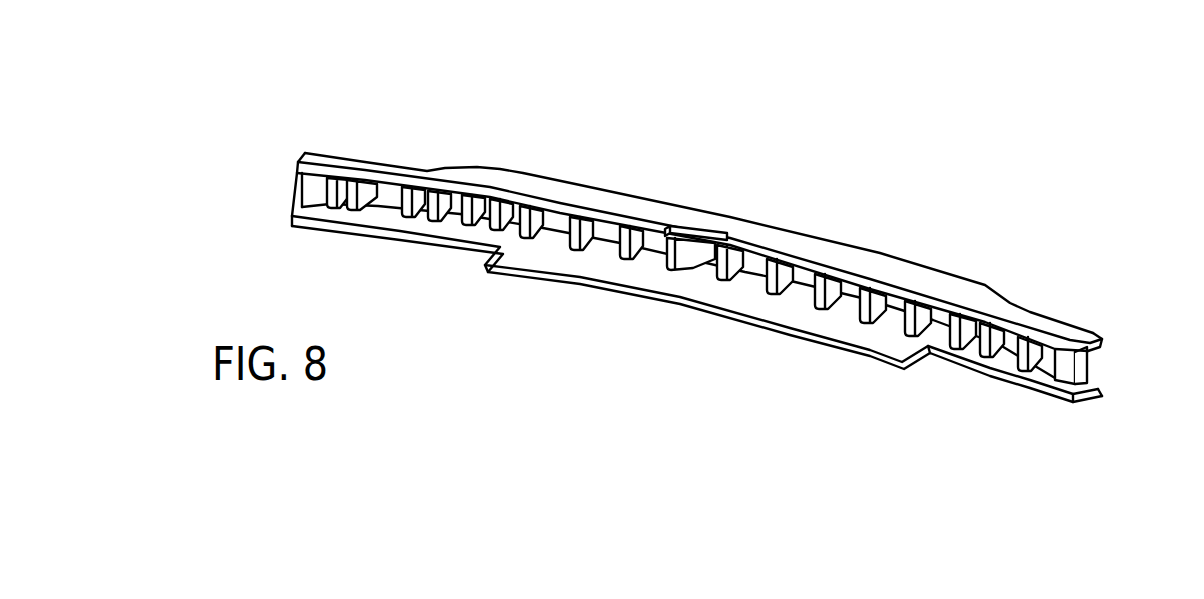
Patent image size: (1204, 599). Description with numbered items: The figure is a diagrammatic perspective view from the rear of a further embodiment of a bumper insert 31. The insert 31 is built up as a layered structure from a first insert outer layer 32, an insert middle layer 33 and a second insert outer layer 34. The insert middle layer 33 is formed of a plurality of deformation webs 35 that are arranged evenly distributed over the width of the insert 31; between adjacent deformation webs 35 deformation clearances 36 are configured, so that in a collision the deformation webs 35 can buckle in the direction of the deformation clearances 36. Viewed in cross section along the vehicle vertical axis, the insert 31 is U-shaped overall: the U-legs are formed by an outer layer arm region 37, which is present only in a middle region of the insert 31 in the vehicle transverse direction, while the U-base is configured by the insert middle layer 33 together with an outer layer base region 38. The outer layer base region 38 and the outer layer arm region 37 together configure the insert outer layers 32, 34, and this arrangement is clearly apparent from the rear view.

The insert 31 is at (502, 122).
The first insert outer layer 32 is at (1102, 395).
The insert middle layer 33 is at (1080, 364).
The second insert outer layer 34 is at (1102, 339).
The deformation webs 35 is at (535, 225).
The deformation clearances 36 is at (605, 258).
The outer layer arm region 37 is at (690, 290).
The outer layer base region 38 is at (750, 283).